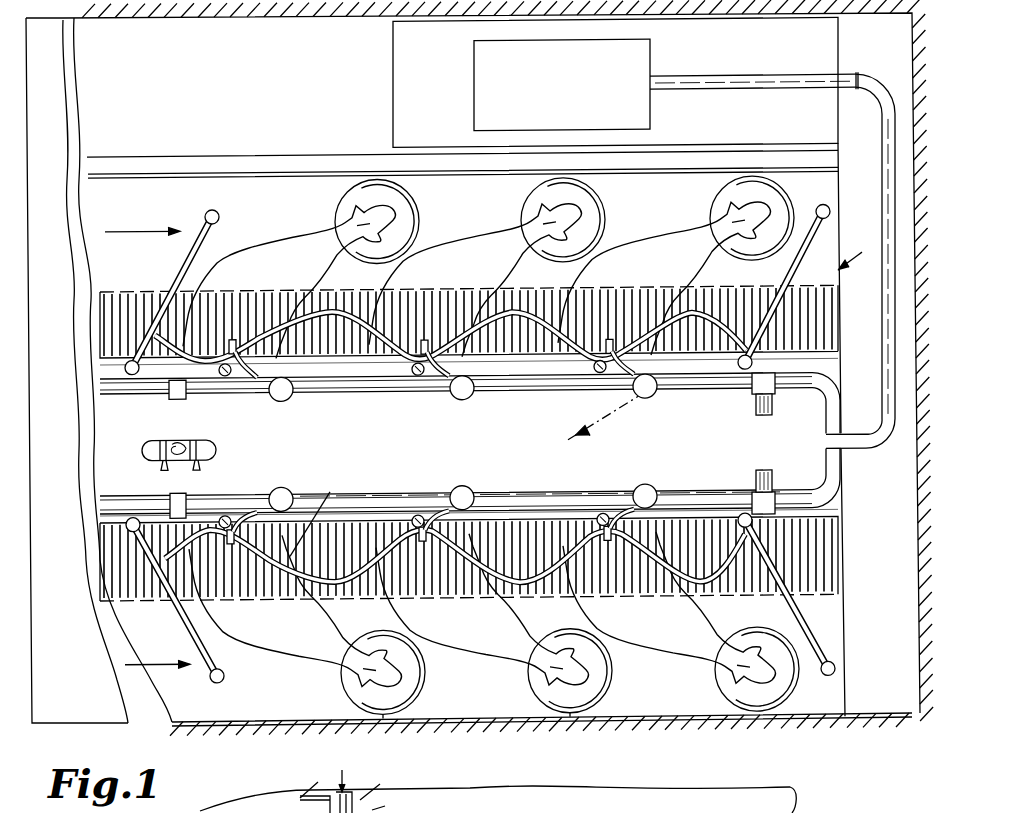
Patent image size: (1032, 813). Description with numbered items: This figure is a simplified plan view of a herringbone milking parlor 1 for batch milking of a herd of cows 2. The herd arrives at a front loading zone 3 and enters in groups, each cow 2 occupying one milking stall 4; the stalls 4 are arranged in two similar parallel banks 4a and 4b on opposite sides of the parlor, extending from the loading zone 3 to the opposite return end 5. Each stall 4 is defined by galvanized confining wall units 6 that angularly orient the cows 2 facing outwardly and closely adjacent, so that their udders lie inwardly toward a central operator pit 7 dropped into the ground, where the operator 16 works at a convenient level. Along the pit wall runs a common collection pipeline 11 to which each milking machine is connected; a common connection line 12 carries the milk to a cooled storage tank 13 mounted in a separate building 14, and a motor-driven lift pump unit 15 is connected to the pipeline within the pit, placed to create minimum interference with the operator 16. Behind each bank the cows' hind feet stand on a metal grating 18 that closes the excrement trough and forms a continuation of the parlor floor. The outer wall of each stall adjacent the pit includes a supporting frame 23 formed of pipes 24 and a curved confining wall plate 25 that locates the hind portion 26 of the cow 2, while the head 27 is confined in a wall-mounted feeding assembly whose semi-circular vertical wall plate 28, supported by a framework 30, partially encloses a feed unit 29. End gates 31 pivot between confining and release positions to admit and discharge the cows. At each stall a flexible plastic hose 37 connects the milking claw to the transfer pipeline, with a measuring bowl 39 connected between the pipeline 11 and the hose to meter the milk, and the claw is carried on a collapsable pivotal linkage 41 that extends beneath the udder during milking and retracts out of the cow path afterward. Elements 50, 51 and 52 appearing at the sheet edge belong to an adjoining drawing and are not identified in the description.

The milking parlor 1 is at (219, 107).
The cow 2 is at (270, 281).
The front loading zone 3 is at (56, 389).
The milking stall 4 is at (271, 217).
The bank of stalls 4a is at (143, 661).
The bank of stalls 4b is at (120, 228).
The return end 5 is at (898, 483).
The confining wall unit 6 is at (333, 382).
The central operator pit 7 is at (512, 468).
The collection pipeline 11 is at (538, 497).
The common connection line 12 is at (882, 381).
The storage tank 13 is at (472, 98).
The separate area or building 14 is at (392, 74).
The lift pump unit 15 is at (763, 475).
The operator 16 is at (140, 447).
The metal grating 18 is at (832, 351).
The supporting frame 23 is at (319, 513).
The pipe 24 is at (420, 380).
The confining metal wall plate 25 is at (205, 351).
The hind portion 26 is at (218, 345).
The head 27 is at (350, 232).
The semi-circular vertical wall plate 28 is at (347, 192).
The feed unit 29 is at (602, 718).
The framework 30 is at (412, 185).
The end gate 31 is at (797, 289).
The flexible hose 37 is at (265, 401).
The measuring bowl 39 is at (282, 405).
The pivotal linkage 41 is at (232, 345).
The valve body 50 is at (357, 774).
The valve seat 51 is at (351, 783).
The valve outlet 52 is at (393, 803).